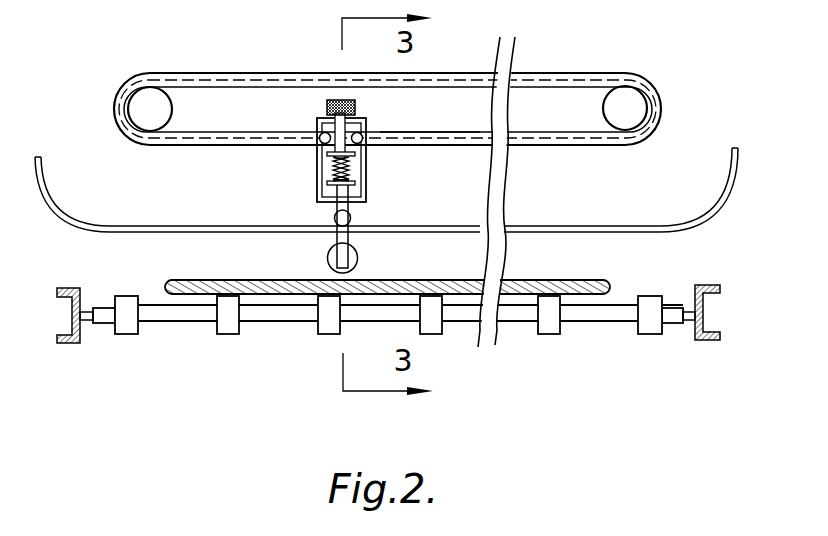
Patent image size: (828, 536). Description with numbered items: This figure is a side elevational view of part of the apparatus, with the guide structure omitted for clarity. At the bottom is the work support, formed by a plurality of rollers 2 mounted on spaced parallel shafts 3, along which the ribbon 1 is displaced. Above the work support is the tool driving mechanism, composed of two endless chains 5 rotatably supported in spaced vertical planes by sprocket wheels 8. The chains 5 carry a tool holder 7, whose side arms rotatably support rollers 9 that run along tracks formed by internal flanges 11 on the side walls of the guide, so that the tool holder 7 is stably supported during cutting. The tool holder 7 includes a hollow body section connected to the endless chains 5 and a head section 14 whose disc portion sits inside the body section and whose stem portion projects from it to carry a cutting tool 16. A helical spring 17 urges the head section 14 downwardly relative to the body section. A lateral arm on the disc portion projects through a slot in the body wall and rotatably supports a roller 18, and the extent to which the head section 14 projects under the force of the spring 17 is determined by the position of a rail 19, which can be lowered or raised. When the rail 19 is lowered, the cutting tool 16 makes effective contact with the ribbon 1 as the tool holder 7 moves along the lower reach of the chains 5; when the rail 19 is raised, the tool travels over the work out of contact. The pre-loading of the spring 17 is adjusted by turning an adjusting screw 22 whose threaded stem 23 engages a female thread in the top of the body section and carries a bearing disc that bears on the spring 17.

The ribbon 1 is at (568, 280).
The rollers 2 is at (225, 335).
The shafts 3 is at (193, 322).
The endless chains 5 is at (207, 140).
The tool holder 7 is at (368, 109).
The sprocket wheels 8 is at (182, 105).
The rollers 9 is at (320, 140).
The internal flanges 11 is at (447, 131).
The head section 14 is at (348, 241).
The cutting tool 16 is at (327, 255).
The helical spring 17 is at (323, 173).
The roller 18 is at (352, 218).
The rail 19 is at (548, 226).
The adjusting screw 22 is at (337, 98).
The threaded stem 23 is at (323, 122).